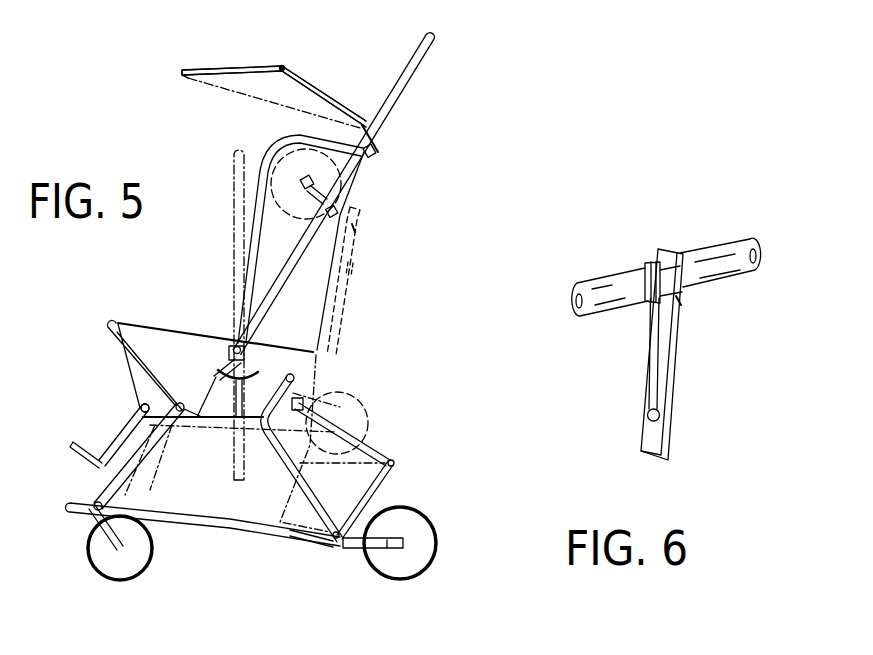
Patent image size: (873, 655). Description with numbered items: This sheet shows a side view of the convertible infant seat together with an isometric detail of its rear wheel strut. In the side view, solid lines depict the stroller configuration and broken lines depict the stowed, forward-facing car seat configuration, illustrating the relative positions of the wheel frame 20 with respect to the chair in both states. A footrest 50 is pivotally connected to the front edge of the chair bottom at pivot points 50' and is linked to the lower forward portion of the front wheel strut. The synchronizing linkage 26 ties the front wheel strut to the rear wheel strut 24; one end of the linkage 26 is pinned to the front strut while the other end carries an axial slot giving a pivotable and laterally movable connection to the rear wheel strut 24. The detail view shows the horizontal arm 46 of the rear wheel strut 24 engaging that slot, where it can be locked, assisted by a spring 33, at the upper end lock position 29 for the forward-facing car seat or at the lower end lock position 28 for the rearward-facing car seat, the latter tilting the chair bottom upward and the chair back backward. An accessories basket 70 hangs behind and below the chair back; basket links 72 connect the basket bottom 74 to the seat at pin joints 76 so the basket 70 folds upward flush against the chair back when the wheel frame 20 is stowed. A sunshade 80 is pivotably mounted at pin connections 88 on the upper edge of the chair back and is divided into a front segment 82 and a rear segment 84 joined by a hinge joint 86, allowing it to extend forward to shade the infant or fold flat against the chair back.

In FIG. 5, the wheel frame 20 is at (368, 294).
In FIG. 6, the rear wheel strut 24 is at (614, 323).
In FIG. 5, the linkage 26 is at (333, 325).
In FIG. 6, the linkage 26 is at (672, 438).
In FIG. 5, the lock position 28 is at (348, 268).
In FIG. 6, the lock position 28 is at (650, 420).
In FIG. 5, the lock position 29 is at (353, 227).
In FIG. 6, the lock position 29 is at (678, 303).
In FIG. 6, the spring 33 is at (652, 270).
In FIG. 6, the horizontal arm 46 is at (737, 275).
In FIG. 5, the footrest 50 is at (90, 436).
In FIG. 5, the pivot points 50' is at (123, 405).
In FIG. 5, the accessories basket 70 is at (386, 446).
In FIG. 5, the basket links 72 is at (377, 442).
In FIG. 5, the basket bottom 74 is at (375, 487).
In FIG. 5, the pin joints 76 is at (306, 381).
In FIG. 5, the sunshade 80 is at (176, 71).
In FIG. 5, the front segment 82 is at (243, 66).
In FIG. 5, the rear segment 84 is at (313, 84).
In FIG. 5, the hinge joint 86 is at (283, 67).
In FIG. 5, the pin connections 88 is at (374, 152).